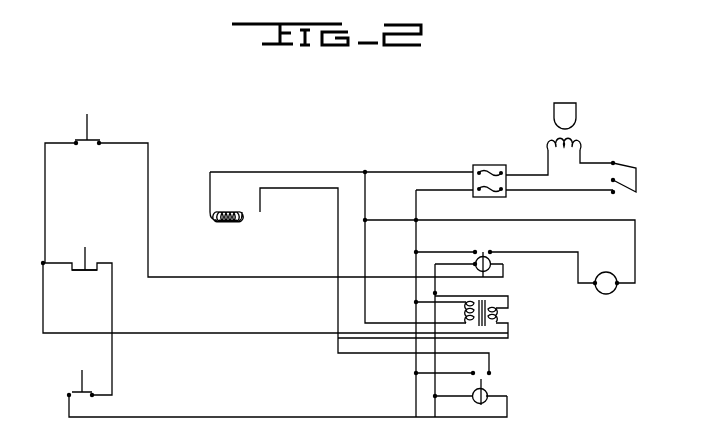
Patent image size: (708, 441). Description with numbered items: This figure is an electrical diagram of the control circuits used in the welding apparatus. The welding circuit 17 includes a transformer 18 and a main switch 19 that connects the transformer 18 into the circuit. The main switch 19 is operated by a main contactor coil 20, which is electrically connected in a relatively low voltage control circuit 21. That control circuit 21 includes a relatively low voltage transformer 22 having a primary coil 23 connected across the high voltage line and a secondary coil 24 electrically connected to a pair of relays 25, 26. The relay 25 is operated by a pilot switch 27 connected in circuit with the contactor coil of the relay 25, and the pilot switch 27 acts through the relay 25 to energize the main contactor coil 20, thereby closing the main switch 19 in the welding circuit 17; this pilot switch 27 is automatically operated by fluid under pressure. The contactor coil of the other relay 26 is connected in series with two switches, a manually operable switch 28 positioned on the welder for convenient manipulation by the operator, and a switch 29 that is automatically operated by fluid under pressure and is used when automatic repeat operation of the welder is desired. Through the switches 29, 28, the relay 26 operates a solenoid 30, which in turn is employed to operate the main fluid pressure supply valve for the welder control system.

The welding circuit 17 is at (585, 129).
The transformer 18 is at (565, 151).
The main switch 19 is at (630, 158).
The main contactor coil 20 is at (607, 295).
The control circuit 21 is at (392, 172).
The low voltage transformer 22 is at (484, 326).
The primary coil 23 is at (462, 318).
The secondary coil 24 is at (494, 315).
The relay 25 is at (493, 263).
The relay 26 is at (492, 387).
The pilot switch 27 is at (100, 132).
The manually operable switch 28 is at (100, 400).
The switch 29 is at (95, 262).
The solenoid 30 is at (245, 221).